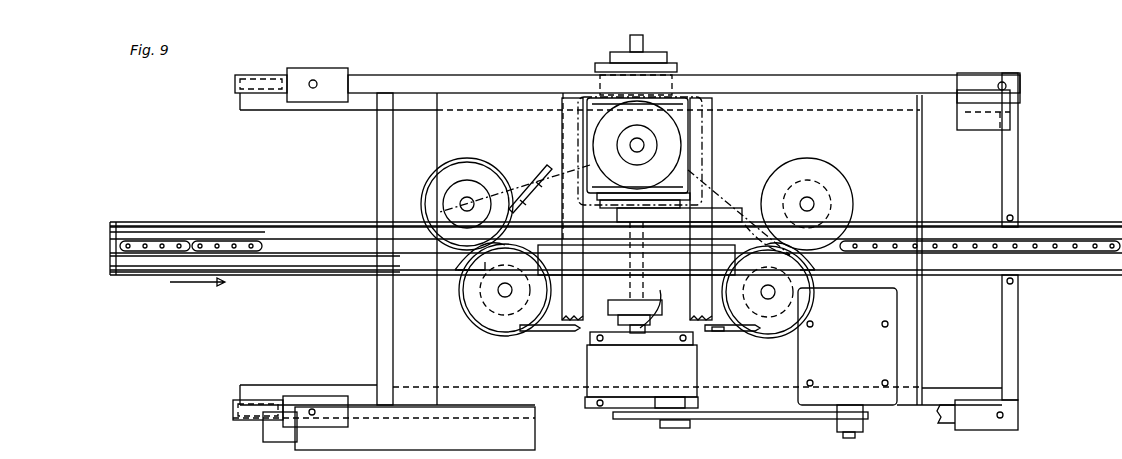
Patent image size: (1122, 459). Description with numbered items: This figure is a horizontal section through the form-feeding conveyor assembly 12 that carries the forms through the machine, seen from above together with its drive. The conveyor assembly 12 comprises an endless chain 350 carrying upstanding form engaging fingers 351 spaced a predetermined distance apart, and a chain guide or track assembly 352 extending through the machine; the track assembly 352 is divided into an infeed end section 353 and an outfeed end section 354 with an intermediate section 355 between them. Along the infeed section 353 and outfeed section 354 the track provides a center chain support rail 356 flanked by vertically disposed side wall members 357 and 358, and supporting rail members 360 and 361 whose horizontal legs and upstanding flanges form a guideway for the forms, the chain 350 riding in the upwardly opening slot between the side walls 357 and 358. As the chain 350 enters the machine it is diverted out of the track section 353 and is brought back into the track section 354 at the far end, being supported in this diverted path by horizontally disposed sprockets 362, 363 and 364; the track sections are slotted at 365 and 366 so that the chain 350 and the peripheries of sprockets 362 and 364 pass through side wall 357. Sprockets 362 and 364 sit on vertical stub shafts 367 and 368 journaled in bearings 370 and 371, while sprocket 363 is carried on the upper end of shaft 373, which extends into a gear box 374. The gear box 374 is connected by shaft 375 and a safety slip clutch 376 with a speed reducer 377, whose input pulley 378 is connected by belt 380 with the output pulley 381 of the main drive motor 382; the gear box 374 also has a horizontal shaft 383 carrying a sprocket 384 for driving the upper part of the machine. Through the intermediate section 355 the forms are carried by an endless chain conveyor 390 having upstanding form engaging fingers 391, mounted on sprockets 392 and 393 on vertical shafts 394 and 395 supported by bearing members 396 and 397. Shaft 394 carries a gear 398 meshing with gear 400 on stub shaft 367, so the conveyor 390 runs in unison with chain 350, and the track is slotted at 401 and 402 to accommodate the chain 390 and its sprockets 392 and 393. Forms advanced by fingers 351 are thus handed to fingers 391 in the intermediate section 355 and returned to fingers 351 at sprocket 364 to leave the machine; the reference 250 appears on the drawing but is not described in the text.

The conveyor assembly 12 is at (127, 222).
The conveyor 250 is at (1078, 262).
The endless chain 350 is at (112, 230).
The form engaging fingers 351 is at (161, 240).
The chain guide or track assembly 352 is at (205, 222).
The infeed end section 353 is at (312, 268).
The outfeed end section 354 is at (1102, 270).
The intermediate section 355 is at (500, 282).
The center chain support rail 356 is at (148, 258).
The side wall member 357 is at (178, 240).
The side wall member 358 is at (178, 262).
The supporting rail member 360 is at (248, 240).
The supporting rail member 361 is at (258, 268).
The sprocket 362 is at (494, 185).
The sprocket 363 is at (683, 140).
The sprocket 364 is at (842, 180).
The slot 365 is at (525, 194).
The slot 366 is at (780, 215).
The stub shaft 367 is at (466, 198).
The stub shaft 368 is at (809, 198).
The bearing 370 is at (440, 212).
The bearing 371 is at (855, 205).
The shaft 373 is at (636, 150).
The gear box 374 is at (580, 126).
The shaft 375 is at (645, 263).
The safety slip clutch 376 is at (642, 343).
The speed reducer 377 is at (699, 360).
The pulley 378 is at (641, 418).
The belt 380 is at (790, 418).
The output pulley 381 is at (866, 420).
The main drive motor 382 is at (866, 351).
The horizontal shaft 383 is at (630, 38).
The sprocket 384 is at (672, 66).
The endless chain conveyor 390 is at (550, 333).
The form engaging fingers 391 is at (718, 330).
The sprocket 392 is at (505, 332).
The sprocket 393 is at (782, 318).
The shaft 394 is at (505, 290).
The shaft 395 is at (792, 304).
The bearing member 396 is at (485, 266).
The bearing member 397 is at (790, 298).
The gear 398 is at (490, 296).
The gear 400 is at (432, 178).
The slot 401 is at (444, 276).
The slot 402 is at (790, 262).